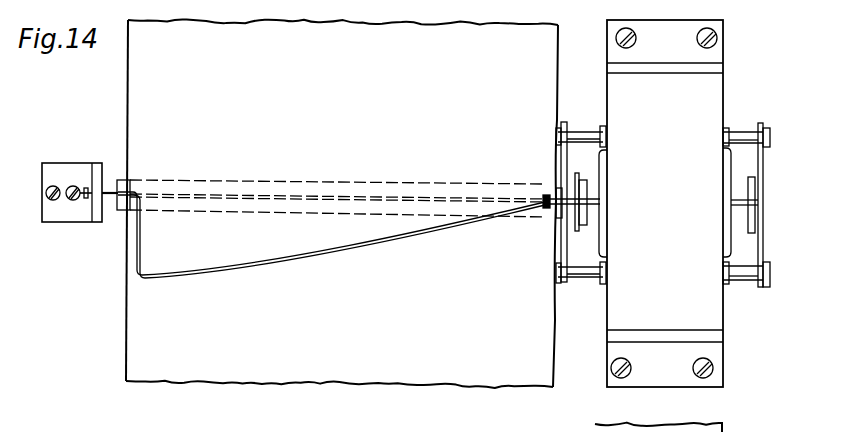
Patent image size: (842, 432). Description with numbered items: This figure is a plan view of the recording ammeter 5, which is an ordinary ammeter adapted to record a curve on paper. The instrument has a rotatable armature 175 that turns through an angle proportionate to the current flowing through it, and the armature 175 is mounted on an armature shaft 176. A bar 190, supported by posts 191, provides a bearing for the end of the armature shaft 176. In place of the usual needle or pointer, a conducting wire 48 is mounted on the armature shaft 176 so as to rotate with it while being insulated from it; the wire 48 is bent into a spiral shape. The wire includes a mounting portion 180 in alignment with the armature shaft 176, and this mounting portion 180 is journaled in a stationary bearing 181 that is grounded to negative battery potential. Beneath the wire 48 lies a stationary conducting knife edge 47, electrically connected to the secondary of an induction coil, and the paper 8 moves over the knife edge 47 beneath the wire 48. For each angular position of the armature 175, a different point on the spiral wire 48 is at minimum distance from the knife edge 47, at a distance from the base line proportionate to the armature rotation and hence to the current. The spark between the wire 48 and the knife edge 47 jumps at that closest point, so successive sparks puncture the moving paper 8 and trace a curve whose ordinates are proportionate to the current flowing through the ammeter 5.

The recording ammeter 5 is at (710, 312).
The paper 8 is at (237, 362).
The knife edge 47 is at (252, 197).
The conducting wire 48 is at (343, 252).
The armature 175 is at (730, 167).
The armature shaft 176 is at (552, 203).
The mounting portion 180 is at (114, 190).
The stationary bearing 181 is at (84, 198).
The bar 190 is at (562, 283).
The posts 191 is at (582, 126).